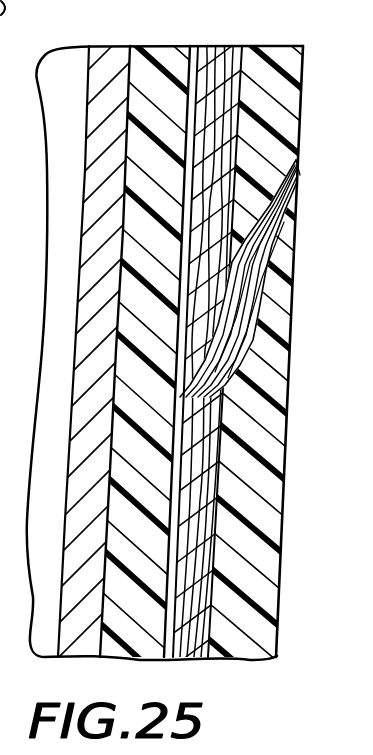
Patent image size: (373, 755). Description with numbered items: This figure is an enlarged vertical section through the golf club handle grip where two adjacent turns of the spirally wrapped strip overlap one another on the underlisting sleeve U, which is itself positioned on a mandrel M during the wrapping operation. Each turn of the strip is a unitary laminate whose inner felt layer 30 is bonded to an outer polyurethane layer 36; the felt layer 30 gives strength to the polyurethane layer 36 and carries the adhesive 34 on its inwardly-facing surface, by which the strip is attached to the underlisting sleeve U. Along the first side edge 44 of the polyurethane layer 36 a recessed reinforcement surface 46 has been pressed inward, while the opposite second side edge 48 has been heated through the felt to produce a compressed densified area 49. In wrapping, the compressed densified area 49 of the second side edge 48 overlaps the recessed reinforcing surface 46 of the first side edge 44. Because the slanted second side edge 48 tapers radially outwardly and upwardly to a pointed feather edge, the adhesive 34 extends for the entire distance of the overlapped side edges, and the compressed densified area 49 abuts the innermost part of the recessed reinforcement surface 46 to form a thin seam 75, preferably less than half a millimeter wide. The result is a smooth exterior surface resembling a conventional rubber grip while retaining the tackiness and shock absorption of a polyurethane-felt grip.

The felt layer 30 is at (218, 54).
The adhesive 34 is at (193, 54).
The polyurethane layer 36 is at (282, 55).
The first side edge 44 is at (175, 384).
The recessed reinforcement surface 46 is at (293, 196).
The second side edge 48 is at (301, 171).
The compressed densified area 49 is at (291, 258).
The seam 75 is at (300, 160).
The mandrel M is at (70, 471).
The underlisting sleeve U is at (131, 181).